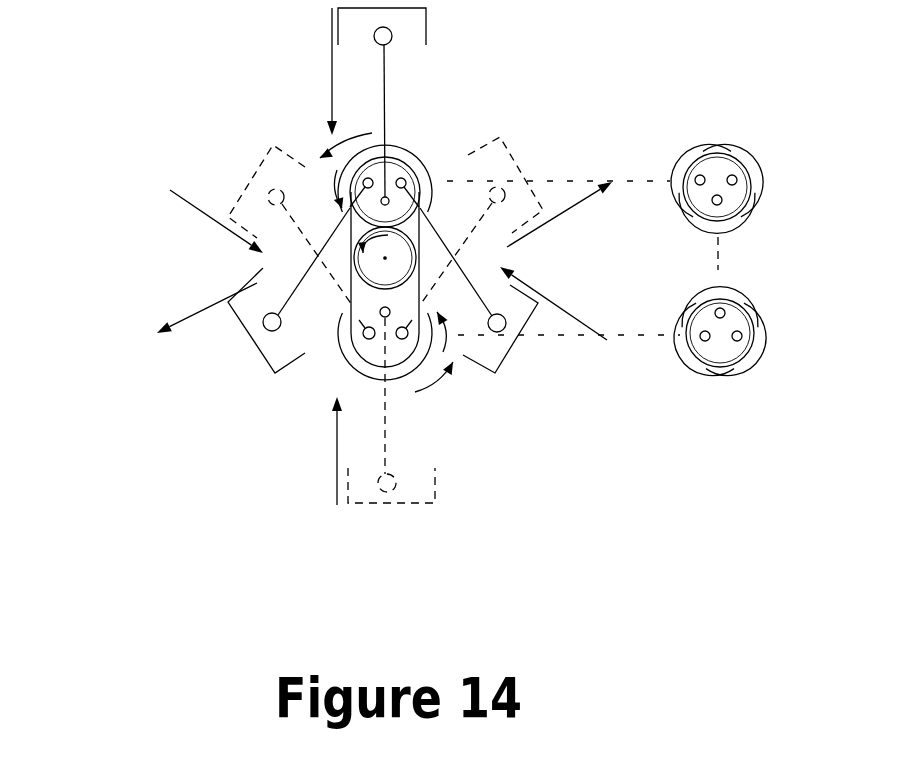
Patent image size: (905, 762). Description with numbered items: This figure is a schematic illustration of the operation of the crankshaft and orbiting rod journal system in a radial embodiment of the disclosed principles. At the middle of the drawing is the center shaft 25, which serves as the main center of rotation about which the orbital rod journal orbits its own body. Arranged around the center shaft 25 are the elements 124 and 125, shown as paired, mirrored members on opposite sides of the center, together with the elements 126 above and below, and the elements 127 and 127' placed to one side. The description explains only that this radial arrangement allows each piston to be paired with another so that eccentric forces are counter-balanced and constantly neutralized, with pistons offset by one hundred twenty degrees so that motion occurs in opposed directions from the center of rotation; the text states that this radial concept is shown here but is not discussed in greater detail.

The center shaft 25 is at (385, 258).
The gripper arm 124 is at (210, 160).
The gripper arm 125 is at (550, 168).
The actuator bracket 126 is at (427, 62).
The idler pulley 127 is at (605, 120).
The idler pulley 127' is at (612, 389).